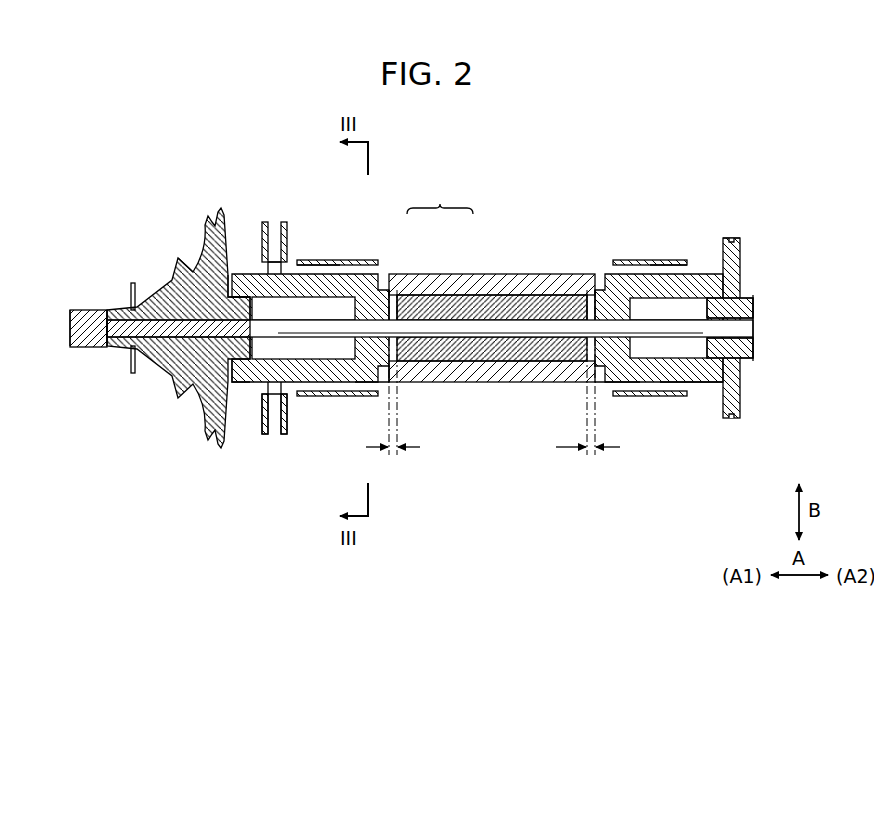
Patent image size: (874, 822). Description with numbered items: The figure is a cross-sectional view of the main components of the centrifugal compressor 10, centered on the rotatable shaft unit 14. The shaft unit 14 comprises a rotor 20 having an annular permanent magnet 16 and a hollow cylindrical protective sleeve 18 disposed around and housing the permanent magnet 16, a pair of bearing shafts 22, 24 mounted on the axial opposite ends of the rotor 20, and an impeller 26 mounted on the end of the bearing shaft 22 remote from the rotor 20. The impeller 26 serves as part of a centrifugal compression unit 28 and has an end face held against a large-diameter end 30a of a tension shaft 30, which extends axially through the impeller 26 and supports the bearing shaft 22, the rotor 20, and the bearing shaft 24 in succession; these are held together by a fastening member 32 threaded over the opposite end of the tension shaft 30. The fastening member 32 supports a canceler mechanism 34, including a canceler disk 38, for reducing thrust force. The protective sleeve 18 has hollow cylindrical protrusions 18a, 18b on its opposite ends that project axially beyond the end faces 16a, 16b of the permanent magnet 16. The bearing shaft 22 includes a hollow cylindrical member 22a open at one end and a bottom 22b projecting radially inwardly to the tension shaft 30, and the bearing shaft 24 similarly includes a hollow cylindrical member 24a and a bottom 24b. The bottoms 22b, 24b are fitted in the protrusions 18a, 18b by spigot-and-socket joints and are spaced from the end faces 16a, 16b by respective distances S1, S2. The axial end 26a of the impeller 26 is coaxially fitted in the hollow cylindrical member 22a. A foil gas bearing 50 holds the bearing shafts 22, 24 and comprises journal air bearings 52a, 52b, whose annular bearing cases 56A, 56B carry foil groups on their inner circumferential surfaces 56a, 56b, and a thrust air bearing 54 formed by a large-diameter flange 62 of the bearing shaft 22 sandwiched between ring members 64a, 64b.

The motor 10 is at (578, 161).
The rotatable shaft unit 14 is at (538, 161).
The permanent magnet 16 is at (497, 288).
The end face of the permanent magnet 16a is at (380, 353).
The end face of the permanent magnet 16b is at (604, 353).
The protective sleeve 18 is at (451, 278).
The hollow cylindrical protrusion 18a is at (362, 372).
The hollow cylindrical protrusion 18b is at (636, 383).
The rotor 20 is at (440, 199).
The bearing shaft 22 is at (242, 384).
The hollow cylindrical member 22a is at (236, 380).
The bottom 22b is at (384, 307).
The bearing shaft 24 is at (662, 388).
The hollow cylindrical member 24a is at (703, 372).
The bottom 24b is at (598, 300).
The impeller 26 is at (178, 353).
The axial end of the impeller 26a is at (254, 305).
The centrifugal compression unit 28 is at (93, 270).
The tension shaft 30 is at (490, 340).
The large-diameter end 30a is at (95, 347).
The fastening member 32 is at (757, 306).
The canceler mechanism 34 is at (747, 270).
The canceler disk 38 is at (737, 253).
The foil gas bearing 50 is at (337, 222).
The journal air bearing 52a is at (332, 256).
The journal air bearing 52b is at (654, 256).
The thrust air bearing 54 is at (272, 218).
The bearing case 56A is at (311, 258).
The inner circumferential surface 56a is at (330, 390).
The inner circumferential surface 56b is at (672, 270).
The bearing case 56B is at (657, 400).
The large-diameter flange 62 is at (273, 413).
The ring member 64a is at (287, 422).
The ring member 64b is at (260, 420).
The distance S1 is at (400, 385).
The distance S2 is at (588, 385).